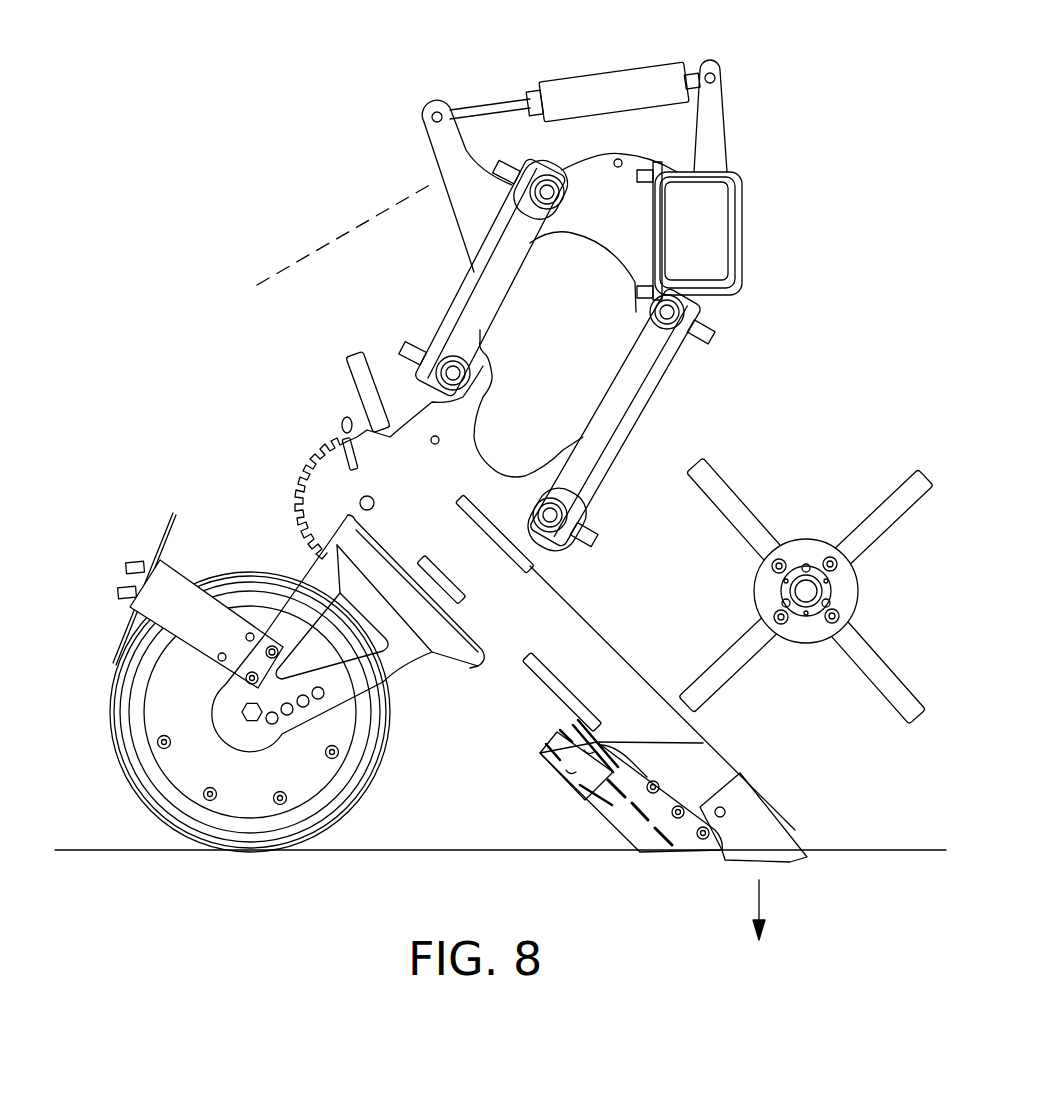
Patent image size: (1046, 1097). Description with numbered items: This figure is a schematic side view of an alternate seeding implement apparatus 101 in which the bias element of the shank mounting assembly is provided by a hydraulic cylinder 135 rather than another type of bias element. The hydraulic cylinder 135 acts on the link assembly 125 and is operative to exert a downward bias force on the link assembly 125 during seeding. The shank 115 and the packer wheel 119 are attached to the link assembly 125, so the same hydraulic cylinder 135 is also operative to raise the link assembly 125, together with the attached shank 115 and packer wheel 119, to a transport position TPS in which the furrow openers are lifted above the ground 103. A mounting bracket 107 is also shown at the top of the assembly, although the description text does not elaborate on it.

The seeding implement apparatus 101 is at (790, 50).
The ground 103 is at (897, 850).
The mounting bracket 107 is at (742, 203).
The shank 115 is at (542, 690).
The packer wheel 119 is at (111, 712).
The link assembly 125 is at (464, 290).
The hydraulic cylinder 135 is at (595, 77).
The transport position TPS is at (336, 238).